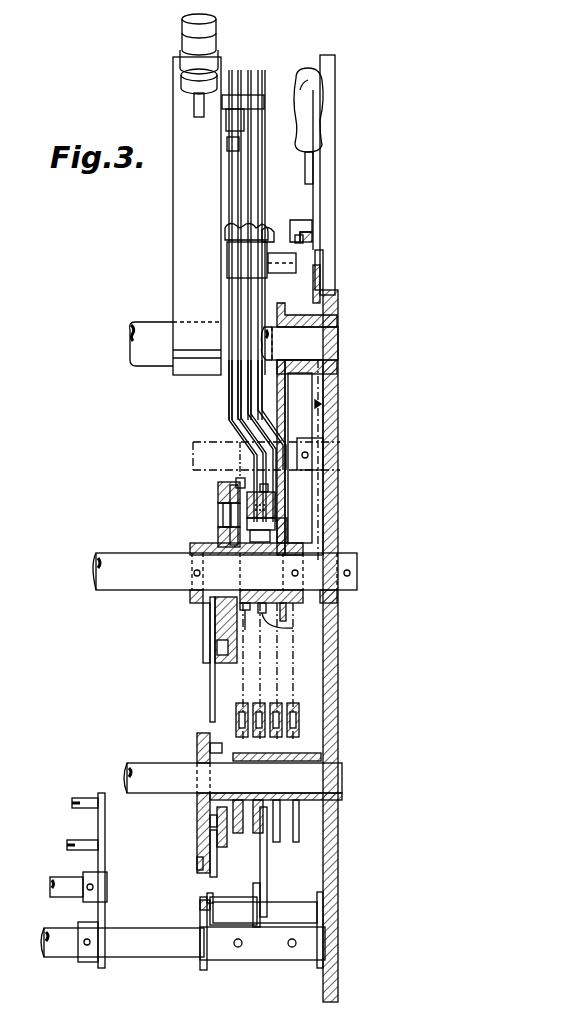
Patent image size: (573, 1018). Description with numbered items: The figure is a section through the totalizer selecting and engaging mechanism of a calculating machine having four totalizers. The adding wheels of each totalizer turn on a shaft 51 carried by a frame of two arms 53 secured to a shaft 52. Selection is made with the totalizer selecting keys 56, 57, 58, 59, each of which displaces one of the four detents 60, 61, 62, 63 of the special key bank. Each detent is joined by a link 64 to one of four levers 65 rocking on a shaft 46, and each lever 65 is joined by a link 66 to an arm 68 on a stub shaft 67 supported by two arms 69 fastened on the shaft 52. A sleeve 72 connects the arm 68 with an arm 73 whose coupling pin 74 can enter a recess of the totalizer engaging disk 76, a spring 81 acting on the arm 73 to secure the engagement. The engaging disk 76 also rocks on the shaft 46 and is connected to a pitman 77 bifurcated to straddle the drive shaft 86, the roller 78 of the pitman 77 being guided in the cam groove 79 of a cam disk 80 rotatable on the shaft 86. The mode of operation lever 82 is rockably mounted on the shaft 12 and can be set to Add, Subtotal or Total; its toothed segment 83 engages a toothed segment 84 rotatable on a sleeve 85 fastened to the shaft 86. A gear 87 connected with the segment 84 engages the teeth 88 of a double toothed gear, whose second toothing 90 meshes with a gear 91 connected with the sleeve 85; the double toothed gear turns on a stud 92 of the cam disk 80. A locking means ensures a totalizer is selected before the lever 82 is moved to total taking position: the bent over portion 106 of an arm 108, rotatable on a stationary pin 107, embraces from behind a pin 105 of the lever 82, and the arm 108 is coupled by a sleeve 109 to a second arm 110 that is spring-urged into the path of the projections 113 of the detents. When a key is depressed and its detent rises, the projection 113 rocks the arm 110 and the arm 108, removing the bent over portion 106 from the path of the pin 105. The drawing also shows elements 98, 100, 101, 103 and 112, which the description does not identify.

The shaft 12 is at (335, 336).
The shaft 46 is at (168, 762).
The shaft 51 is at (70, 880).
The shaft 52 is at (145, 958).
The frame arm 53 is at (105, 906).
The totalizer selecting key 56 is at (182, 22).
The totalizer selecting key 57 is at (182, 40).
The totalizer selecting key 58 is at (180, 56).
The totalizer selecting key 59 is at (181, 80).
The detent 60 is at (262, 80).
The detent 61 is at (250, 70).
The detent 62 is at (240, 70).
The detent 63 is at (231, 70).
The link 64 is at (262, 396).
The lever 65 is at (270, 742).
The link 66 is at (265, 858).
The stub shaft 67 is at (280, 902).
The arm 68 is at (257, 905).
The arm 69 is at (320, 968).
The sleeve 72 is at (245, 905).
The arm 73 is at (203, 860).
The coupling pin 74 is at (200, 900).
The totalizer engaging disk 76 is at (210, 835).
The pitman 77 is at (210, 699).
The roller 78 is at (220, 663).
The cam groove 79 is at (218, 514).
The cam disk 80 is at (218, 535).
The spring 81 is at (217, 822).
The mode of operation lever 82 is at (300, 107).
The toothed segment 83 is at (280, 430).
The toothed segment 84 is at (287, 525).
The sleeve 85 is at (286, 610).
The drive shaft 86 is at (148, 560).
The gear 87 is at (293, 628).
The teeth 88 is at (275, 498).
The second toothing 90 is at (240, 470).
The gear 91 is at (250, 620).
The stud 92 is at (218, 492).
The lever position 98 is at (205, 456).
The rod 100 is at (318, 432).
The pointer 101 is at (321, 404).
The pin 103 is at (92, 841).
The pin 105 is at (315, 238).
The bent over portion 106 is at (302, 220).
The stationary pin 107 is at (221, 266).
The arm 108 is at (296, 258).
The sleeve 109 is at (290, 275).
The arm 110 is at (262, 236).
The block 112 is at (255, 232).
The projection 113 is at (225, 230).